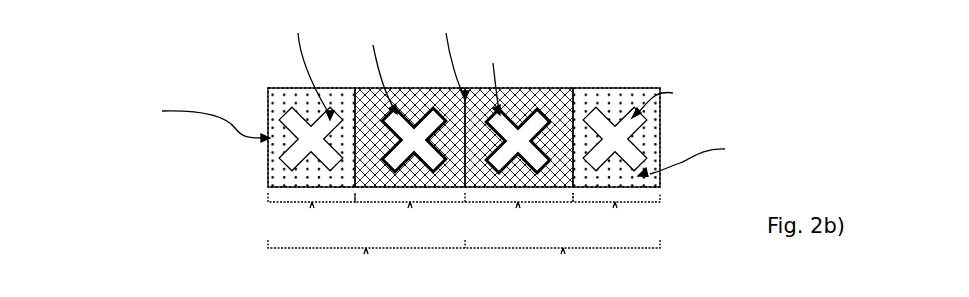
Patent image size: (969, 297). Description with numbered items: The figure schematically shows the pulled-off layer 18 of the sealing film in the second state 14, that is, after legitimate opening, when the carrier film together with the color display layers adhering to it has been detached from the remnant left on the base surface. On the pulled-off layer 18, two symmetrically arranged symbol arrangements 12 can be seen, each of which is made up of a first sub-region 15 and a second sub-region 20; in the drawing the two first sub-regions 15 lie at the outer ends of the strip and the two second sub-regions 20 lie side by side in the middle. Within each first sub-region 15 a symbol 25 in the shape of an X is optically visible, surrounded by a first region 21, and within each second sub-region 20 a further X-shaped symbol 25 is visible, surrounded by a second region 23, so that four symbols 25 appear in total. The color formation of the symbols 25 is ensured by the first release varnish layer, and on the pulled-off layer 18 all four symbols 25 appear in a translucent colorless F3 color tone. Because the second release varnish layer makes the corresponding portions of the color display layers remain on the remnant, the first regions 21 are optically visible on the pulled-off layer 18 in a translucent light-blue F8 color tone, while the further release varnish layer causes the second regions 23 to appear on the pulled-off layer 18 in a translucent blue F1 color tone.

The second state 14 is at (423, 100).
The pulled-off layer 18 is at (464, 100).
The first region 21 is at (268, 170).
The second region 23 is at (353, 112).
The symbol 25 is at (296, 114).
The translucent colorless color tone F3 is at (496, 64).
The translucent blue color tone F1 is at (450, 54).
The translucent light-blue color tone F8 is at (216, 87).
The first sub-region 15 is at (464, 213).
The second sub-region 20 is at (464, 213).
The symbol arrangement 12 is at (464, 260).